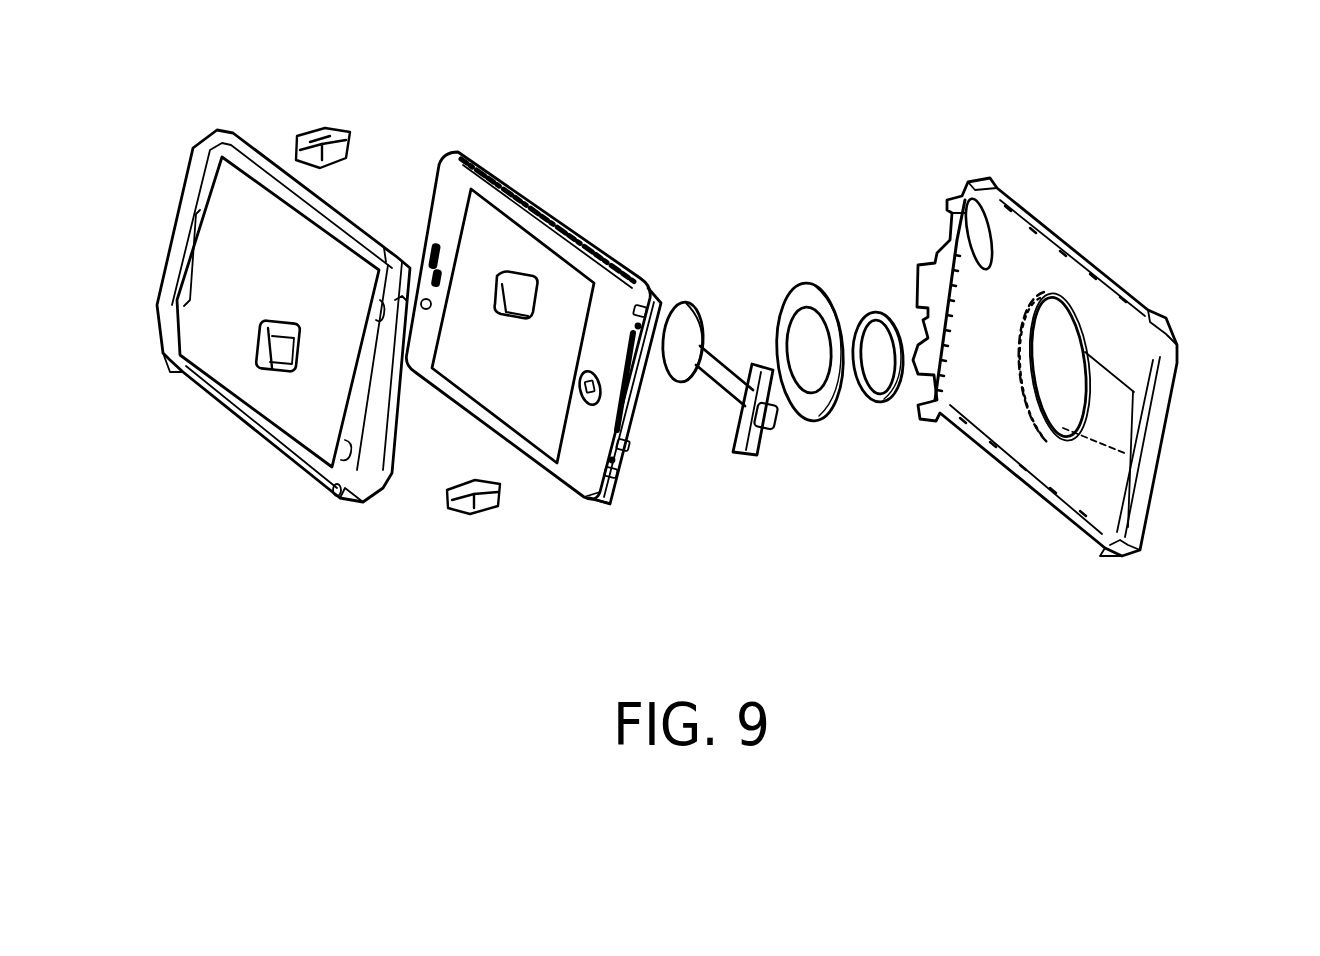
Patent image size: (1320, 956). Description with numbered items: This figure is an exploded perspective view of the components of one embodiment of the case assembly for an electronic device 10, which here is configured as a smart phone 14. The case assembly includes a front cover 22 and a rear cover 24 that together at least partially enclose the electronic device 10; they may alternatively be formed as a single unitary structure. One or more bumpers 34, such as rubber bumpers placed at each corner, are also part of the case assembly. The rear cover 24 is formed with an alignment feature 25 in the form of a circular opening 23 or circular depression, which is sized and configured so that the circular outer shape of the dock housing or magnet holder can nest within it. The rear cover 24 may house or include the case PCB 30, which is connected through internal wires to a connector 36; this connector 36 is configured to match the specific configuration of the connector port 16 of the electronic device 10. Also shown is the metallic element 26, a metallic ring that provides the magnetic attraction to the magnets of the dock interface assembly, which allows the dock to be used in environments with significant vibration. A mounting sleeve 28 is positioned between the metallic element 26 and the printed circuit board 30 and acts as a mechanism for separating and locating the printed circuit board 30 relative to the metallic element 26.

The electronic device 10 is at (465, 157).
The smart phone 14 is at (567, 493).
The connector port 16 is at (638, 407).
The front cover 22 is at (165, 348).
The circular opening 23 is at (1035, 302).
The rear cover 24 is at (1045, 223).
The alignment feature 25 is at (1080, 333).
The metallic element 26 is at (807, 282).
The mounting sleeve 28 is at (882, 310).
The case PCB 30 is at (682, 303).
The bumper 34 is at (325, 130).
The connector 36 is at (747, 460).